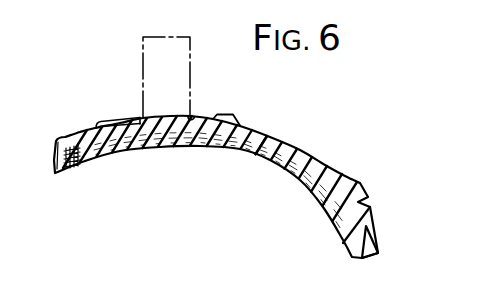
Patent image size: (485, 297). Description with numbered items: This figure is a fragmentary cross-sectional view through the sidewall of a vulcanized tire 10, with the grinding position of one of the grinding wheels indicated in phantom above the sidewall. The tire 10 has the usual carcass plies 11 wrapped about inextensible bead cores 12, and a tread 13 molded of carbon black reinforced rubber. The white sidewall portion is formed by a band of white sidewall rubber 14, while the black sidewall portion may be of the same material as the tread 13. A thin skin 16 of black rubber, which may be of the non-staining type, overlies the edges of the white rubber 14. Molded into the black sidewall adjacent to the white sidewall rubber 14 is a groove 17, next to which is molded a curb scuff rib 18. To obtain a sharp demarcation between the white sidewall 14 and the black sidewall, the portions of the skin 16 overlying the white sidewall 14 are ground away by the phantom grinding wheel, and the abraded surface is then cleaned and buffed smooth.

The vulcanized tire 10 is at (327, 142).
The carcass plies 11 is at (261, 137).
The bead cores 12 is at (62, 177).
The tread 13 is at (374, 211).
The white sidewall rubber 14 is at (136, 127).
The skin 16 is at (140, 119).
The groove 17 is at (192, 118).
The curb scuff rib 18 is at (221, 98).